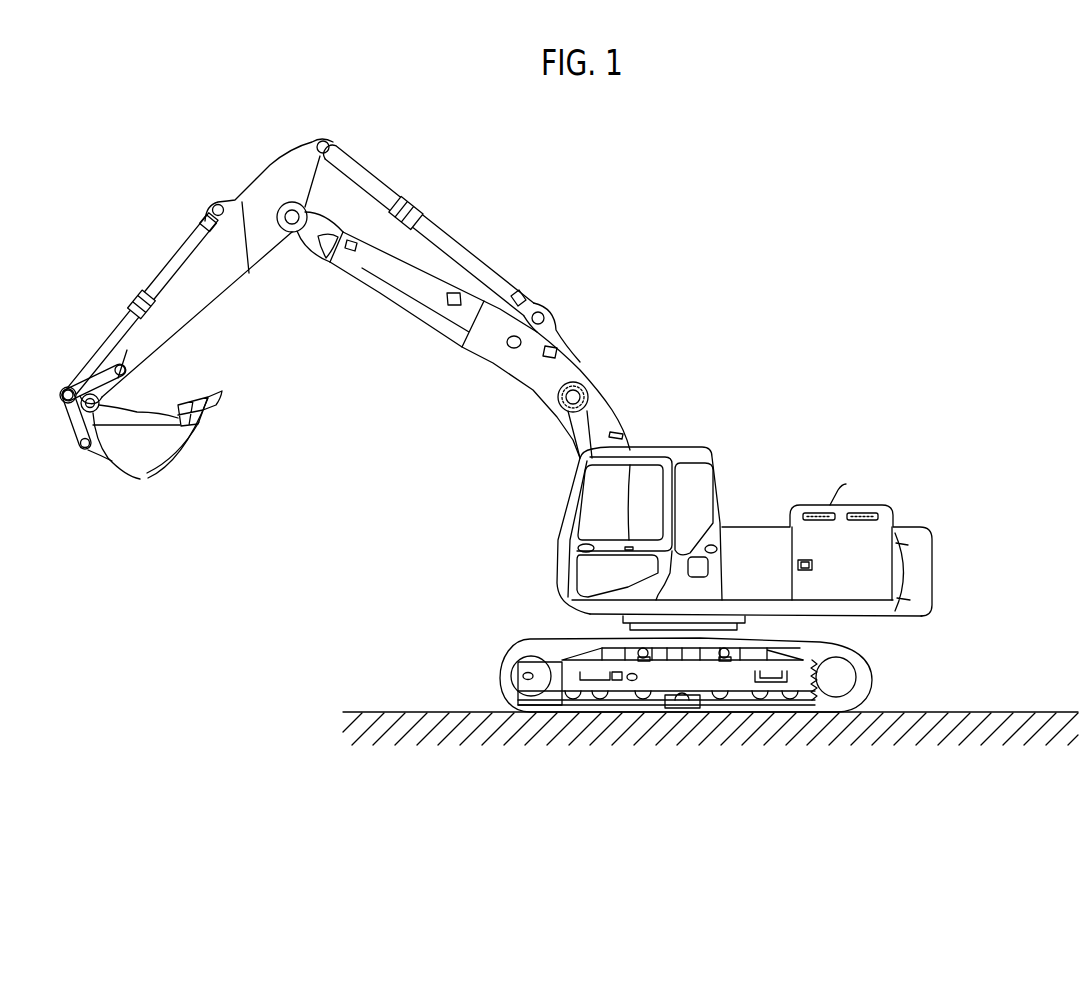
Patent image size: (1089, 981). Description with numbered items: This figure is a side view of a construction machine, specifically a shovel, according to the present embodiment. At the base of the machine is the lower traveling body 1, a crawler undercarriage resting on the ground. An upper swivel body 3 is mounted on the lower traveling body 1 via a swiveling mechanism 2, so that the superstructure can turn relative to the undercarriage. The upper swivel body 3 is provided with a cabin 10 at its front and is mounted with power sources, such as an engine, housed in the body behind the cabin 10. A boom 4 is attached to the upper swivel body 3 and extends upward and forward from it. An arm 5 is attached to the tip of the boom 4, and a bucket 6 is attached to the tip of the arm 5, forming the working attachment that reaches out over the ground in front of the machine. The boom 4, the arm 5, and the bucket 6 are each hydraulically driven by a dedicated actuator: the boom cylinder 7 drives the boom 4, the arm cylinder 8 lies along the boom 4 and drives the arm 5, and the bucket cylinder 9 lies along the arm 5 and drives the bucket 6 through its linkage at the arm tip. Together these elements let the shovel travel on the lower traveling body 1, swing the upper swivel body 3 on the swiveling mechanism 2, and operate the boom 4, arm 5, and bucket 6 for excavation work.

The lower traveling body 1 is at (500, 675).
The swiveling mechanism 2 is at (740, 628).
The upper swivel body 3 is at (760, 522).
The boom 4 is at (494, 358).
The arm 5 is at (223, 281).
The bucket 6 is at (141, 474).
The boom cylinder 7 is at (582, 431).
The arm cylinder 8 is at (483, 270).
The bucket cylinder 9 is at (170, 267).
The cabin 10 is at (698, 446).